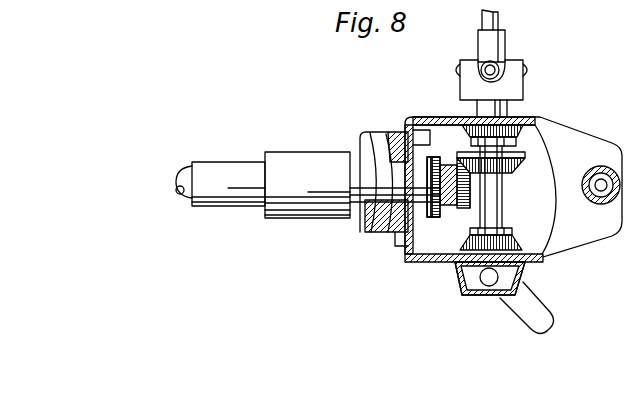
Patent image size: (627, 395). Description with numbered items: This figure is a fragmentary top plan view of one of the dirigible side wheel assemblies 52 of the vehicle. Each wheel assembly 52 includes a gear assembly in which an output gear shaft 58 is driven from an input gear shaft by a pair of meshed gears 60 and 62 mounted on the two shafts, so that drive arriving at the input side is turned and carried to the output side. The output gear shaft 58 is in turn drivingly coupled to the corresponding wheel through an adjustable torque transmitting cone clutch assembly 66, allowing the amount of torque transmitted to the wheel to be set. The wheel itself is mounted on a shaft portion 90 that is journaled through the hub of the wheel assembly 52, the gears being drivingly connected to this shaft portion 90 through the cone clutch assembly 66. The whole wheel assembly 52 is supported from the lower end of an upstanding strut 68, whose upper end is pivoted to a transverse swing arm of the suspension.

The dirigible side wheel assembly 52 is at (545, 110).
The output gear shaft 58 is at (422, 155).
The meshed gear 60 is at (522, 165).
The meshed gear 62 is at (410, 258).
The adjustable torque transmitting cone clutch assembly 66 is at (365, 227).
The upstanding strut 68 is at (601, 166).
The shaft portion 90 is at (182, 197).